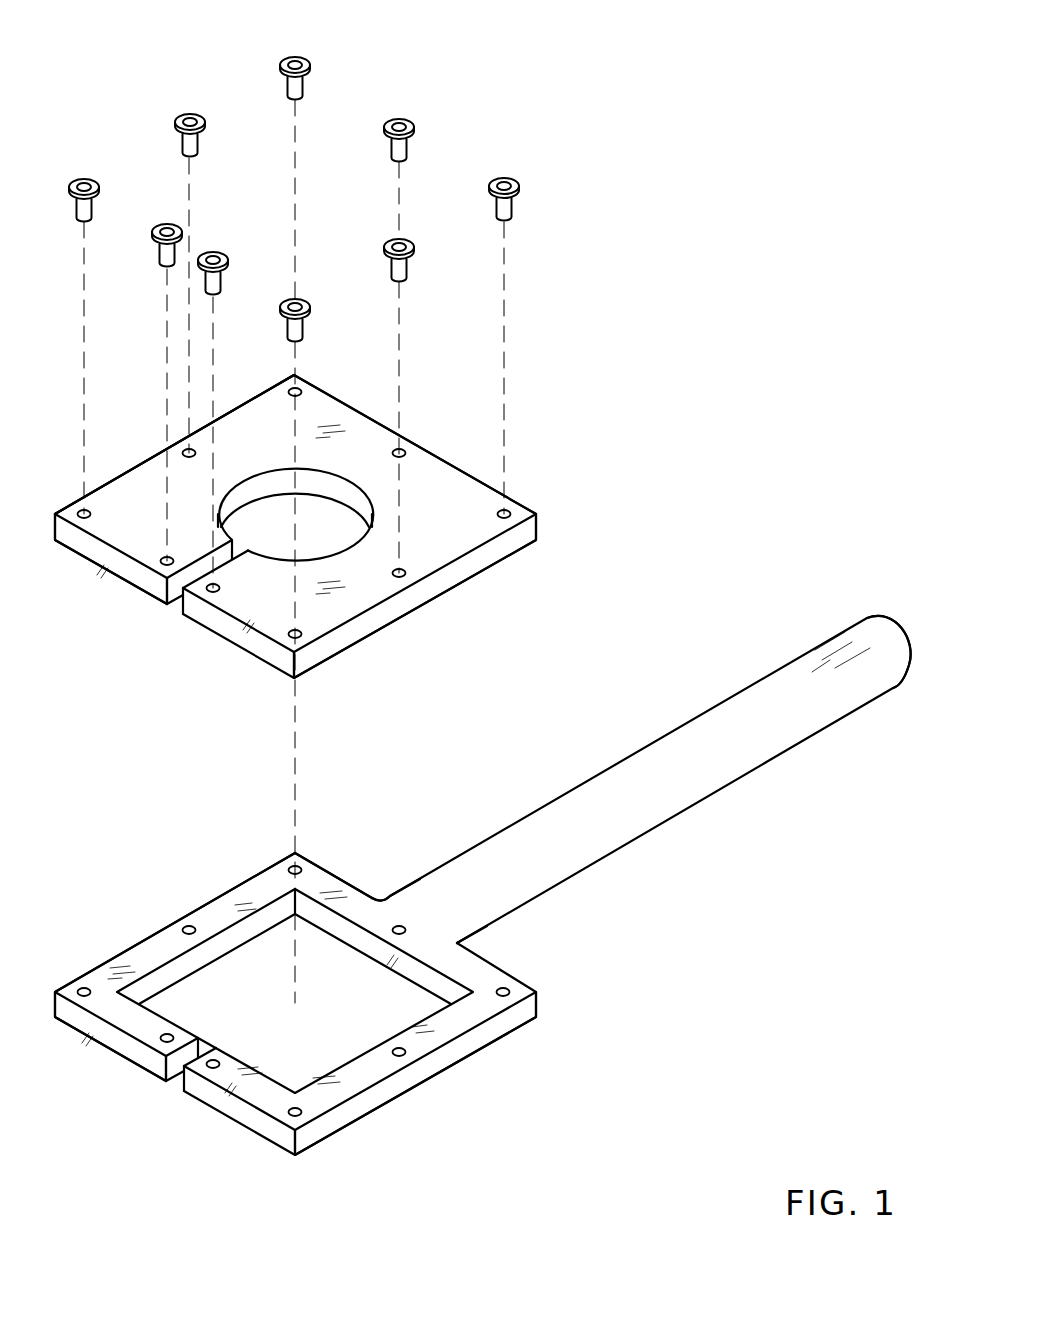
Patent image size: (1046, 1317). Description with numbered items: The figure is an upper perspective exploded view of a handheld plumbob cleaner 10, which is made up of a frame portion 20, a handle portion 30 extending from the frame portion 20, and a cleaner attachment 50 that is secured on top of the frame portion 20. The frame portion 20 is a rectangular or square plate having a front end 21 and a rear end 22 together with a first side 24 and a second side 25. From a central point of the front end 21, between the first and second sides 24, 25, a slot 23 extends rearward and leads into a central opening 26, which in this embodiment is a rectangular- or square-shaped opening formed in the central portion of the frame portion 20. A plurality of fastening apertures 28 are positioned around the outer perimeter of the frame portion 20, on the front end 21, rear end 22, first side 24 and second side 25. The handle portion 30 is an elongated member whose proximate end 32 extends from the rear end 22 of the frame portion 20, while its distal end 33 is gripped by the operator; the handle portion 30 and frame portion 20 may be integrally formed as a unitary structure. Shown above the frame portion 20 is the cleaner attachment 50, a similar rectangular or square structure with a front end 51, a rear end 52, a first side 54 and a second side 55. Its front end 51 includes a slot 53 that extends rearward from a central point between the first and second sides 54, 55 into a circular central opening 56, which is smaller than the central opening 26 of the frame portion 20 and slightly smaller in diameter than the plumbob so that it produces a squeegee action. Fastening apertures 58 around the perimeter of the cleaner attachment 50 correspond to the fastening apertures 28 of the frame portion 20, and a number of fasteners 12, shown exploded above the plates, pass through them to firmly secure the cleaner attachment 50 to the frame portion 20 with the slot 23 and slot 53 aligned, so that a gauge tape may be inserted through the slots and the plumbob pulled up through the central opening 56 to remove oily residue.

The handheld plumbob cleaner 10 is at (750, 230).
The fasteners 12 is at (181, 116).
The frame portion 20 is at (330, 985).
The front end 21 is at (123, 1045).
The rear end 22 is at (348, 883).
The slot 23 is at (175, 1073).
The first side 24 is at (453, 1050).
The second side 25 is at (147, 936).
The central opening 26 is at (253, 993).
The fastening apertures 28 is at (293, 866).
The handle portion 30 is at (641, 740).
The proximate end 32 is at (450, 917).
The distal end 33 is at (888, 618).
The cleaner attachment 50 is at (351, 525).
The front end 51 is at (134, 573).
The rear end 52 is at (333, 393).
The slot 53 is at (173, 600).
The first side 54 is at (403, 603).
The second side 55 is at (133, 464).
The central opening 56 is at (262, 488).
The fastening apertures 58 is at (404, 452).